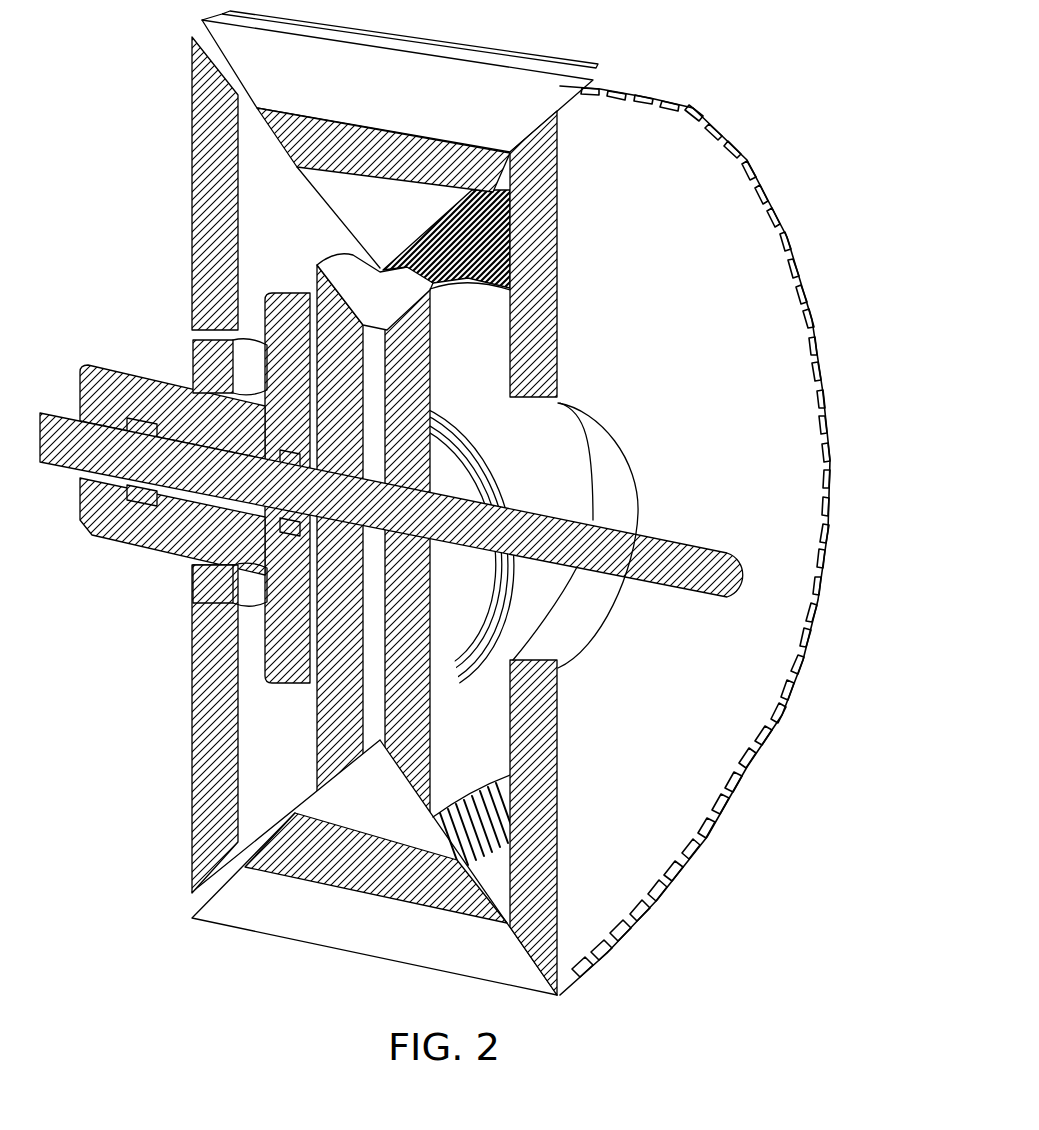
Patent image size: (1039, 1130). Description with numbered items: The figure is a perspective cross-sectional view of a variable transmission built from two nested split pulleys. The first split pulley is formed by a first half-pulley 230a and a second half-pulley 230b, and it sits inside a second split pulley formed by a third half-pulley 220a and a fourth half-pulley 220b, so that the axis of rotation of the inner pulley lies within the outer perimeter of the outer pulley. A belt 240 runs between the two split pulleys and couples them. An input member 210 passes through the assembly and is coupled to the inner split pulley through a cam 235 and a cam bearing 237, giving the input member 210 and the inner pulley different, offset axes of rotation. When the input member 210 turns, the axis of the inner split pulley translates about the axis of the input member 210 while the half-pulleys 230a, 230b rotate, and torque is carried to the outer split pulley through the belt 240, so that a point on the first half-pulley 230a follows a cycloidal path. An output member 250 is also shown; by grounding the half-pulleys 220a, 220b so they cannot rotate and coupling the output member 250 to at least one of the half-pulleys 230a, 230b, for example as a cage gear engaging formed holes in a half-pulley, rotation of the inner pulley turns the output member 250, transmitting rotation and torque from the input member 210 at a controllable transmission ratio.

The input member 210 is at (697, 554).
The third half-pulley 220a is at (735, 275).
The fourth half-pulley 220b is at (212, 688).
The first half-pulley 230a is at (556, 470).
The second half-pulley 230b is at (332, 722).
The cam 235 is at (474, 570).
The cam bearing 237 is at (434, 682).
The belt 240 is at (500, 92).
The output member 250 is at (136, 528).